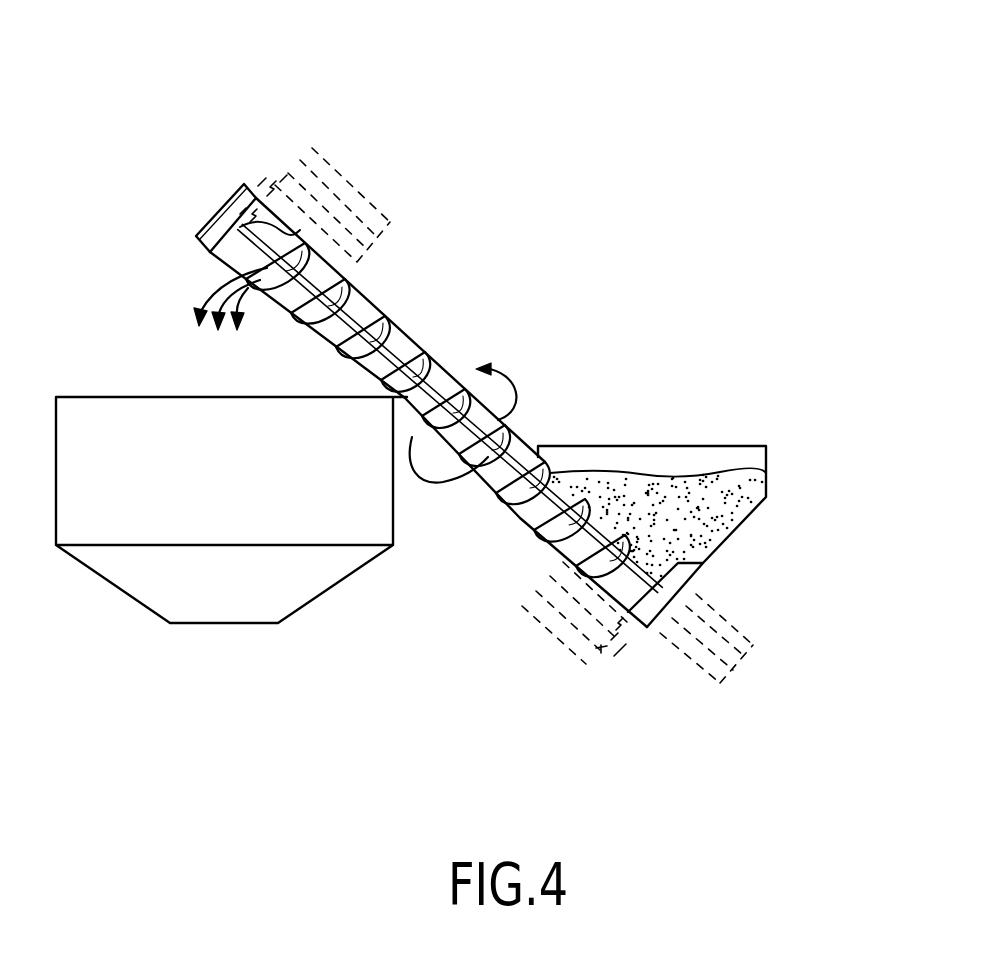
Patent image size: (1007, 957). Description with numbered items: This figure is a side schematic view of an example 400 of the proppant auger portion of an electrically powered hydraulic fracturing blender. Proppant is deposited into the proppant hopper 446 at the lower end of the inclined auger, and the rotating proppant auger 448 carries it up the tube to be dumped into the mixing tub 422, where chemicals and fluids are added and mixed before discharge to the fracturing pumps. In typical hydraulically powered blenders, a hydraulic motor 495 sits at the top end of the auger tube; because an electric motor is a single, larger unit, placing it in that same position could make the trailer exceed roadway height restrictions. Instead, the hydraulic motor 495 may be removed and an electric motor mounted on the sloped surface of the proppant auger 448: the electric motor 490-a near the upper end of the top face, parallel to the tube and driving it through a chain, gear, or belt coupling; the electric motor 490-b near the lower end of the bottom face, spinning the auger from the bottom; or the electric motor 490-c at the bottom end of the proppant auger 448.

The example 400 is at (667, 93).
The mixing tub 422 is at (248, 475).
The proppant hopper 446 is at (770, 456).
The proppant auger 448 is at (403, 348).
The hydraulic motor 495 is at (231, 199).
The electric motor 490-a is at (370, 218).
The electric motor 490-b is at (538, 581).
The electric motor 490-c is at (727, 656).